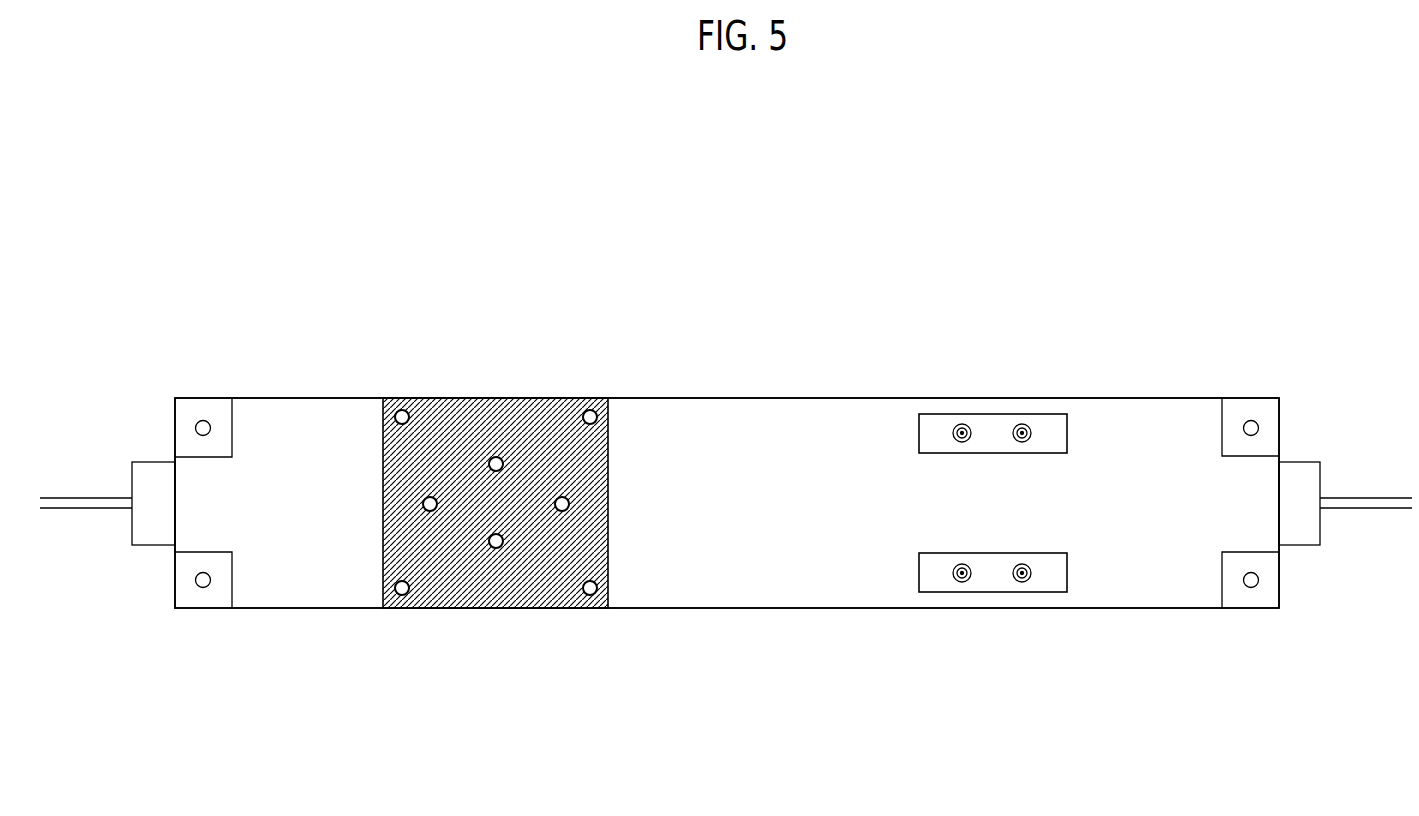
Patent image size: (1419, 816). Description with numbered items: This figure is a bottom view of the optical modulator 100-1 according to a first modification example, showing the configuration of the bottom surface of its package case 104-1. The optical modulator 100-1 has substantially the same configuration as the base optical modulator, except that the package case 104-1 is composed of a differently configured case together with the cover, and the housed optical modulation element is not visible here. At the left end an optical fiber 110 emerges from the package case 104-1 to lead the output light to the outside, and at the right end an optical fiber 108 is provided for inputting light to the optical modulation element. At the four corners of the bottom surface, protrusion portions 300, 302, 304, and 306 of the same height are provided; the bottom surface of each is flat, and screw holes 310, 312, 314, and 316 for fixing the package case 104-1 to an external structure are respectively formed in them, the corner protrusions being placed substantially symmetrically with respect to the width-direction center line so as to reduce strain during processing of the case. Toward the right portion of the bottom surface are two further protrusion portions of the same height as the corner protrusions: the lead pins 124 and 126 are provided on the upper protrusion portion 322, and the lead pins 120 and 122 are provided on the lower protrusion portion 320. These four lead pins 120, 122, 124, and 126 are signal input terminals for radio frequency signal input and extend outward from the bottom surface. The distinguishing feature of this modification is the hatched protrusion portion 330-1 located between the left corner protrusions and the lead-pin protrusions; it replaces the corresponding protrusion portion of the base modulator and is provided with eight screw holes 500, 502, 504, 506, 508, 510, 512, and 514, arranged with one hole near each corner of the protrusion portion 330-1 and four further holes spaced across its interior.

The optical modulator 100-1 is at (310, 223).
The package case 104-1 is at (727, 413).
The optical fiber 108 is at (1345, 560).
The optical fiber 110 is at (107, 562).
The lead pin 120 is at (913, 649).
The lead pin 122 is at (1002, 656).
The lead pin 124 is at (912, 355).
The lead pin 126 is at (1004, 350).
The protrusion portion 300 is at (210, 362).
The protrusion portion 302 is at (1224, 372).
The protrusion portion 304 is at (218, 642).
The protrusion portion 306 is at (1230, 643).
The screw hole 310 is at (170, 365).
The screw hole 312 is at (1279, 362).
The screw hole 314 is at (174, 653).
The screw hole 316 is at (1281, 650).
The protrusion portion 320 is at (1016, 635).
The protrusion portion 322 is at (1013, 376).
The protrusion portion 330-1 is at (495, 459).
The screw hole 500 is at (351, 367).
The screw hole 502 is at (364, 462).
The screw hole 504 is at (479, 372).
The screw hole 506 is at (634, 466).
The screw hole 508 is at (563, 361).
The screw hole 510 is at (343, 635).
The screw hole 512 is at (501, 633).
The screw hole 514 is at (645, 638).